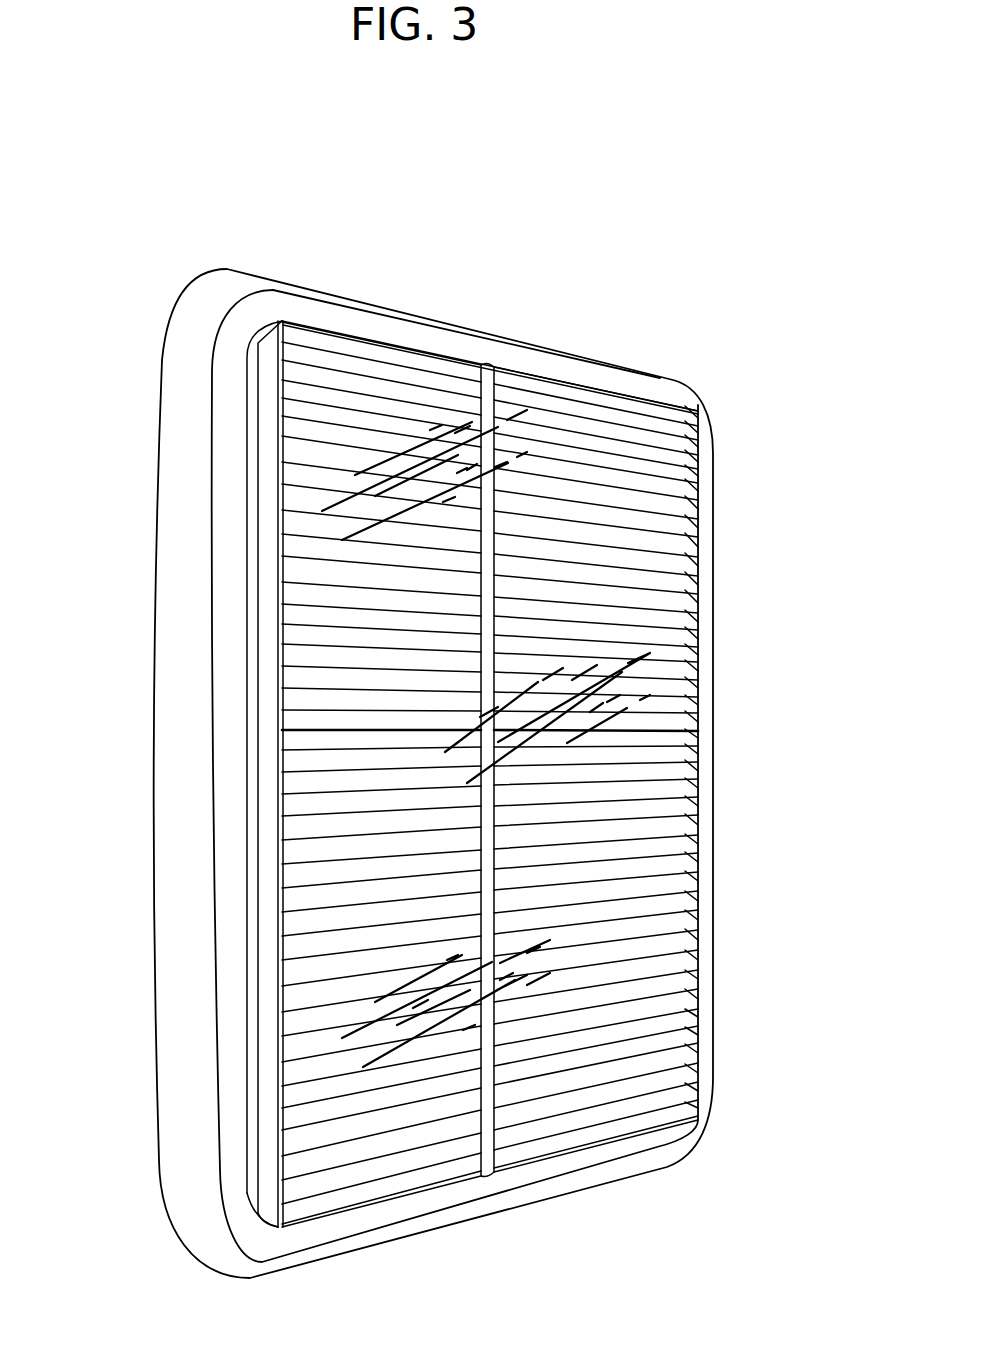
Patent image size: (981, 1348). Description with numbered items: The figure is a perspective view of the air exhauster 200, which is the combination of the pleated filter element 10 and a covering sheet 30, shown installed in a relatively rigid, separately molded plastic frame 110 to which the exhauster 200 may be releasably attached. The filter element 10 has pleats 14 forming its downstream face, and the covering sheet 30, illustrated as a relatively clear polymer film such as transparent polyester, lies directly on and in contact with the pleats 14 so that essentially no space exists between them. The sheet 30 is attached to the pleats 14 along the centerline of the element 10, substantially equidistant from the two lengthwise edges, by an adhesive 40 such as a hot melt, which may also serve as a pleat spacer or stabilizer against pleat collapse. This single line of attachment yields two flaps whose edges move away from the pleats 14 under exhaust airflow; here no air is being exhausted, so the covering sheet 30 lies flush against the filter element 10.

The air exhauster 200 is at (426, 748).
The frame 110 is at (230, 1043).
The filter element 10 is at (267, 487).
The pleats 14 is at (680, 467).
The covering sheet 30 is at (298, 722).
The adhesive 40 is at (488, 1170).